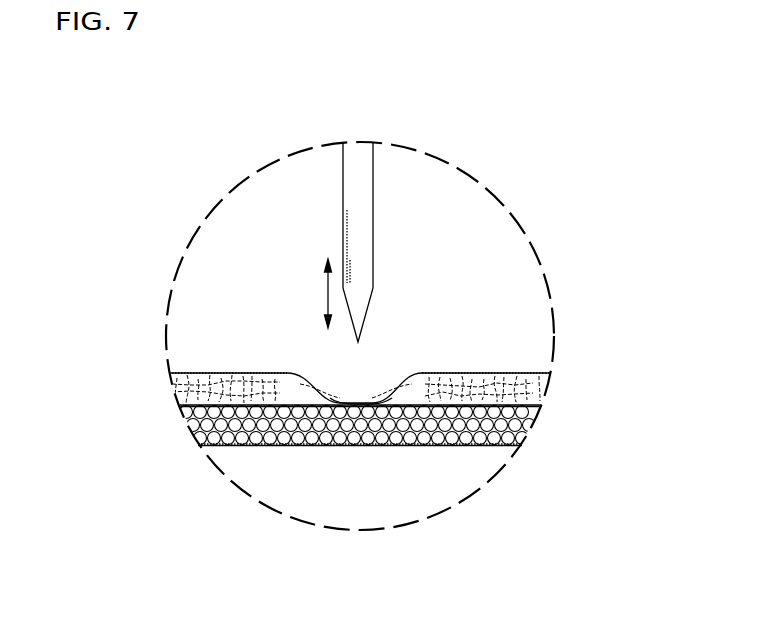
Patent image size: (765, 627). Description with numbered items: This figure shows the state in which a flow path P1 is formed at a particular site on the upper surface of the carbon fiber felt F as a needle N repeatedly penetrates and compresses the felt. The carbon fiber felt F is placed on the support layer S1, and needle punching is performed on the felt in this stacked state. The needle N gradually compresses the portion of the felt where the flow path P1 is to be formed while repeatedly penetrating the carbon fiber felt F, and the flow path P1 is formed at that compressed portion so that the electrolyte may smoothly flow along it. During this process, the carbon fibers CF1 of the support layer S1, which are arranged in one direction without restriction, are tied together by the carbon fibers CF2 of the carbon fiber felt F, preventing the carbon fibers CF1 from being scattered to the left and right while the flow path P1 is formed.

The needle N is at (365, 202).
The flow path P1 is at (354, 390).
The carbon fibers of the carbon fiber felt CF2 is at (482, 373).
The carbon fiber felt F is at (556, 386).
The support layer S1 is at (554, 432).
The carbon fibers of the support layer CF1 is at (403, 446).